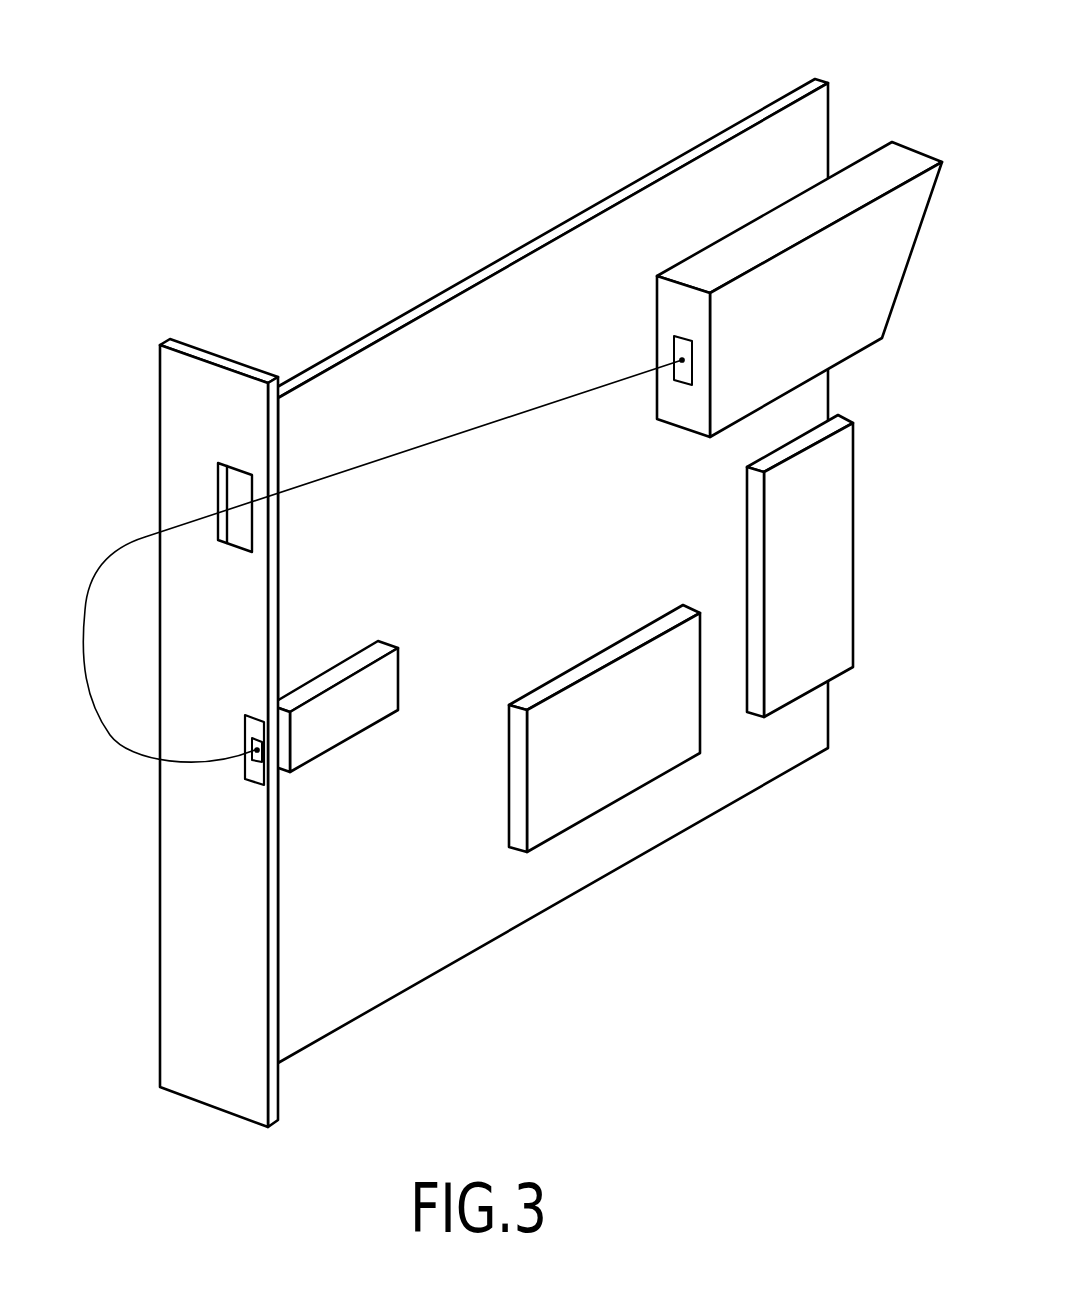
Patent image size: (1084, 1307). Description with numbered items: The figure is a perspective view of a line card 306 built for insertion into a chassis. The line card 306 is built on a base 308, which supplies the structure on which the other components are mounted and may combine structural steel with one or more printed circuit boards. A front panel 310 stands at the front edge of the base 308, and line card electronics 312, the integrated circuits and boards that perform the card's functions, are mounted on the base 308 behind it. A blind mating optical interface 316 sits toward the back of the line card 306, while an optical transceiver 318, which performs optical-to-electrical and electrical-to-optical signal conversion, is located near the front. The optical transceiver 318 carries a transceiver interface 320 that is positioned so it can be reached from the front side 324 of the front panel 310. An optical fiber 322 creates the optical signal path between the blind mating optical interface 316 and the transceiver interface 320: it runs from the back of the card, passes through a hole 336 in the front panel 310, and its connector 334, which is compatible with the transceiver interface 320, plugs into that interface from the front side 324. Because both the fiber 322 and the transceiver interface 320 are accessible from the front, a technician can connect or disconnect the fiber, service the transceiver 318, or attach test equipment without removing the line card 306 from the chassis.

The line card 306 is at (478, 74).
The base 308 is at (755, 117).
The front panel 310 is at (160, 370).
The line card electronics 312 is at (637, 768).
The blind mating optical interface 316 is at (865, 332).
The optical transceiver 318 is at (398, 678).
The transceiver interface 320 is at (260, 785).
The optical fiber 322 is at (100, 577).
The front side 324 is at (847, 540).
The connector 334 is at (248, 778).
The hole 336 is at (237, 470).